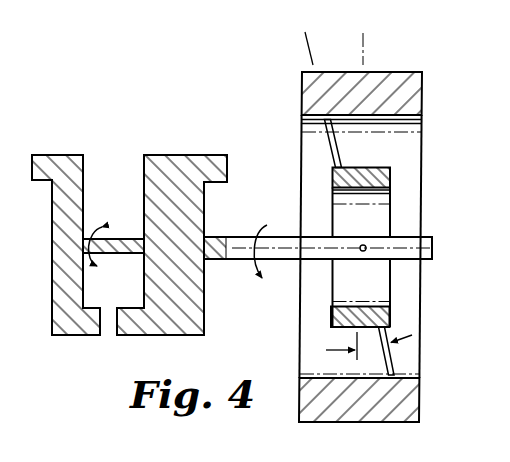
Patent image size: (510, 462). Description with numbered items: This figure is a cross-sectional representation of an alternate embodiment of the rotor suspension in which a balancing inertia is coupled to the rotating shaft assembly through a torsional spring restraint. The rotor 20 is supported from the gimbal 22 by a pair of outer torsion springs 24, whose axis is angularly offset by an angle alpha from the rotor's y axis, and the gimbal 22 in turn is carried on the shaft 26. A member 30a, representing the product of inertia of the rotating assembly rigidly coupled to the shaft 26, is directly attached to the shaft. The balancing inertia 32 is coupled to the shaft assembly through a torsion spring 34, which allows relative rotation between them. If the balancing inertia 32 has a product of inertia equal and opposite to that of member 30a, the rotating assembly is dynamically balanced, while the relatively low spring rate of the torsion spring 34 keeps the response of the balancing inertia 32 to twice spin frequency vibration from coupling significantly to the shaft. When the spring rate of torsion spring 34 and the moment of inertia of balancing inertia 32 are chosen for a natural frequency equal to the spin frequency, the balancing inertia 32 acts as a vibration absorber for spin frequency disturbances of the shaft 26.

The rotor 20 is at (395, 71).
The gimbal 22 is at (390, 175).
The outer torsion springs 24 is at (328, 134).
The shaft 26 is at (252, 237).
The member 30a is at (192, 155).
The balancing inertia 32 is at (80, 166).
The torsion spring 34 is at (113, 239).